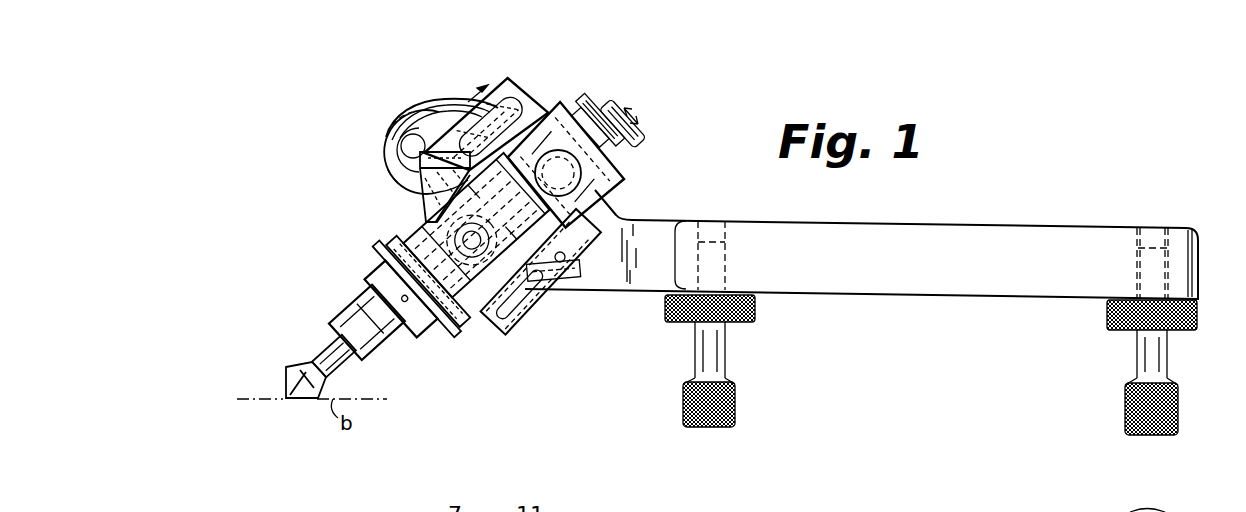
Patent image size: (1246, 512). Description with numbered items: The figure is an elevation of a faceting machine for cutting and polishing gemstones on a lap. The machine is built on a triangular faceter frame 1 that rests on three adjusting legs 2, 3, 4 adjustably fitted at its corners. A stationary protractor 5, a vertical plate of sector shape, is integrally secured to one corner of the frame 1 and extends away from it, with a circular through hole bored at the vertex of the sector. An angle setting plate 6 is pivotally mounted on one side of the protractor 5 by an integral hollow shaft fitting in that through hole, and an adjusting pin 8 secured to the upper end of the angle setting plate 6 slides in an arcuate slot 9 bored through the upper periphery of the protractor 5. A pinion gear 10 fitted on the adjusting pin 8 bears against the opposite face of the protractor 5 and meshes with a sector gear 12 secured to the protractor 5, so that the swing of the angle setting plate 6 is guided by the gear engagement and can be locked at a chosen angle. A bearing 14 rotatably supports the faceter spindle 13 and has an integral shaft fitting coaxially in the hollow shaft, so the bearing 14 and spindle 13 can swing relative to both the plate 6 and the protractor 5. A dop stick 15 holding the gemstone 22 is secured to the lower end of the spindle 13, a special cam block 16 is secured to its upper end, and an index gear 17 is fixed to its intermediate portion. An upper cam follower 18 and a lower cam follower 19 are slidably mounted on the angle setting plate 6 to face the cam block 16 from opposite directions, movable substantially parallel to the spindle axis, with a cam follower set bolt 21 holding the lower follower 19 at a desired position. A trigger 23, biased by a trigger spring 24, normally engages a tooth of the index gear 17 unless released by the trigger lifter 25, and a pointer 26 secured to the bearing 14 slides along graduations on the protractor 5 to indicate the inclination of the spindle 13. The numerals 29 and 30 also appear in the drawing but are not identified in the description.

The triangular faceter frame 1 is at (928, 297).
The adjusting leg 2 is at (727, 357).
The adjusting leg 3 is at (1171, 367).
The adjusting leg 4 is at (1151, 409).
The stationary protractor 5 is at (445, 98).
The angle setting plate 6 is at (540, 313).
The adjusting pin 8 is at (517, 107).
The arcuate slot 9 is at (395, 132).
The pinion gear 10 is at (500, 88).
The sector gear 12 is at (392, 165).
The faceter spindle 13 is at (380, 346).
The bearing 14 is at (388, 262).
The dop stick 15 is at (330, 348).
The cam block 16 is at (615, 178).
The index gear 17 is at (443, 327).
The upper cam follower 18 is at (428, 118).
The lower cam follower 19 is at (517, 320).
The cam follower set bolt 21 is at (558, 283).
The gemstone 22 is at (287, 380).
The trigger 23 is at (367, 284).
The trigger spring 24 is at (428, 198).
The trigger lifter 25 is at (470, 282).
The pointer 26 is at (542, 130).
The adjusting knob 29 is at (635, 120).
The direction arrow 30 is at (477, 92).